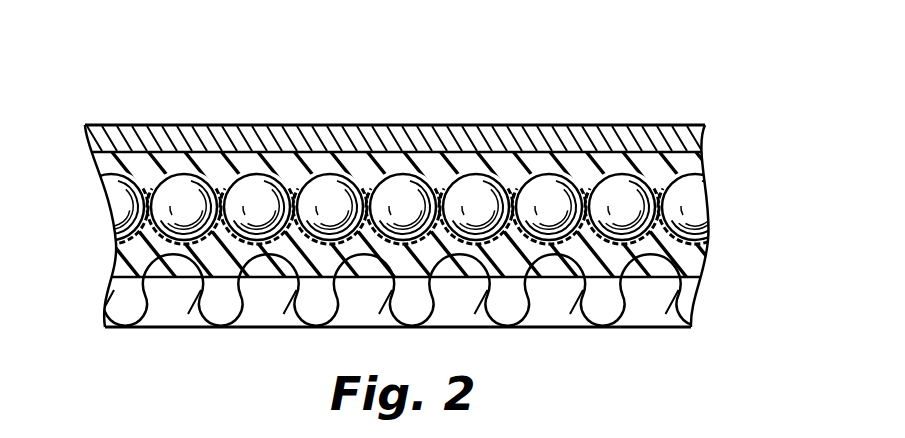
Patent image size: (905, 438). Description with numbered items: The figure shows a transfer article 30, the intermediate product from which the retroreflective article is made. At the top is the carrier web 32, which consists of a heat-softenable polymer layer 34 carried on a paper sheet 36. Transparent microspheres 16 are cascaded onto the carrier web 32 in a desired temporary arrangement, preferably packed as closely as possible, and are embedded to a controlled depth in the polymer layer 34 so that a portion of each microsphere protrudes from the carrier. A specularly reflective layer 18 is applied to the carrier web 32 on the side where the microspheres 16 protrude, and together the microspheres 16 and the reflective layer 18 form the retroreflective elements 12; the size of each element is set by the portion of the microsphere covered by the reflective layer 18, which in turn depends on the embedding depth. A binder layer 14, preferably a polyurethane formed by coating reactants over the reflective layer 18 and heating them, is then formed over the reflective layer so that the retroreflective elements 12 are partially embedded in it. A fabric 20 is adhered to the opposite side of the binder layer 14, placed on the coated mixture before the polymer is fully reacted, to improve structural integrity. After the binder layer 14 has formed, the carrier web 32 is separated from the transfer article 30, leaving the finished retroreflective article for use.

The transfer article 30 is at (644, 74).
The carrier web 32 is at (78, 125).
The paper sheet 36 is at (154, 126).
The heat-softenable polymer layer 34 is at (678, 166).
The retroreflective elements 12 is at (551, 166).
The microspheres 16 is at (322, 175).
The specularly reflective layer 18 is at (432, 240).
The binder layer 14 is at (117, 260).
The fabric 20 is at (634, 316).